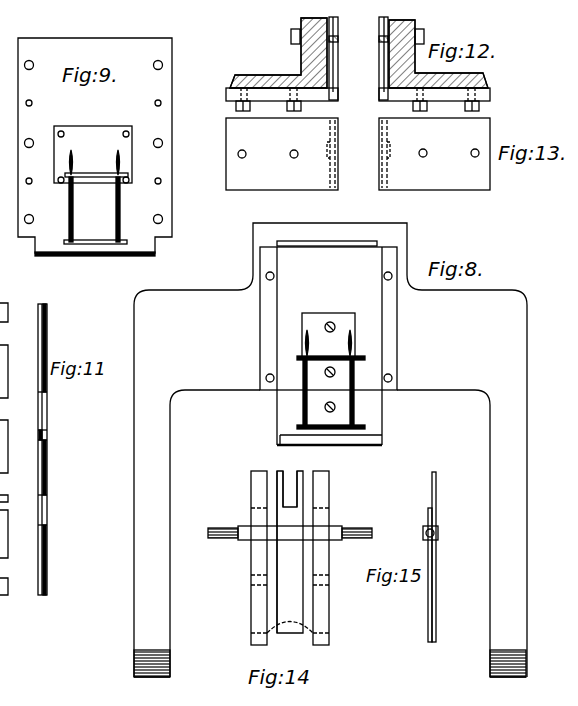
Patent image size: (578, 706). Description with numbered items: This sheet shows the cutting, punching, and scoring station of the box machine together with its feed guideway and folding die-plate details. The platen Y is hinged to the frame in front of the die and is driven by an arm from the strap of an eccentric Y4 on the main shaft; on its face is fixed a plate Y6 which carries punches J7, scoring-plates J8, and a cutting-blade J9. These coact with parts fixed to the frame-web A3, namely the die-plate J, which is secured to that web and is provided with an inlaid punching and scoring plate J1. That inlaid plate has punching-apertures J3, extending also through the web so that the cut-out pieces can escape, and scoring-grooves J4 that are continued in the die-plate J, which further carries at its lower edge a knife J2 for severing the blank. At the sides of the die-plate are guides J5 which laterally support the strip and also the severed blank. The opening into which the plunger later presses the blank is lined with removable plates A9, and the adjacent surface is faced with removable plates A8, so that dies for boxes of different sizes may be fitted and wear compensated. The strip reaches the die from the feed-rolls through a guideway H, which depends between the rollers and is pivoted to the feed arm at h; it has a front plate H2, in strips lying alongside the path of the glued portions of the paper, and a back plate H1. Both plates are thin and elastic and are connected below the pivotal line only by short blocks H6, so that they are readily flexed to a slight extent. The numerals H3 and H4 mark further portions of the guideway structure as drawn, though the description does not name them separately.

In FIG. 9, the die-plate J is at (95, 145).
In FIG. 9, the punching and scoring plate J1 is at (93, 154).
In FIG. 9, the knife J2 is at (106, 255).
In FIG. 9, the punching-apertures J3 is at (116, 162).
In FIG. 9, the scoring-grooves J4 is at (105, 177).
In FIG. 11, the guides J5 is at (38, 330).
In FIG. 8, the punches J7 is at (352, 340).
In FIG. 8, the scoring-plates J8 is at (350, 389).
In FIG. 8, the cutting-blade J9 is at (340, 447).
In FIG. 12, the frame-web A3 is at (300, 55).
In FIG. 12, the removable facing plates A8 is at (486, 96).
In FIG. 12, the removable lining plates A9 is at (383, 62).
In FIG. 8, the platen Y is at (330, 450).
In FIG. 8, the eccentric Y4 is at (328, 343).
In FIG. 8, the plate Y6 is at (331, 345).
In FIG. 14, the guideway H is at (329, 612).
In FIG. 15, the guideway H is at (428, 610).
In FIG. 14, the pivot h is at (372, 538).
In FIG. 15, the pivot h is at (422, 531).
In FIG. 14, the back plate H1 is at (274, 615).
In FIG. 15, the back plate H1 is at (429, 628).
In FIG. 14, the front plate H2 is at (262, 615).
In FIG. 15, the front plate H2 is at (436, 630).
In FIG. 14, the middle bar H3 is at (292, 587).
In FIG. 14, the fork prongs H4 is at (299, 470).
In FIG. 14, the short blocks H6 is at (330, 645).
In FIG. 15, the short blocks H6 is at (430, 647).